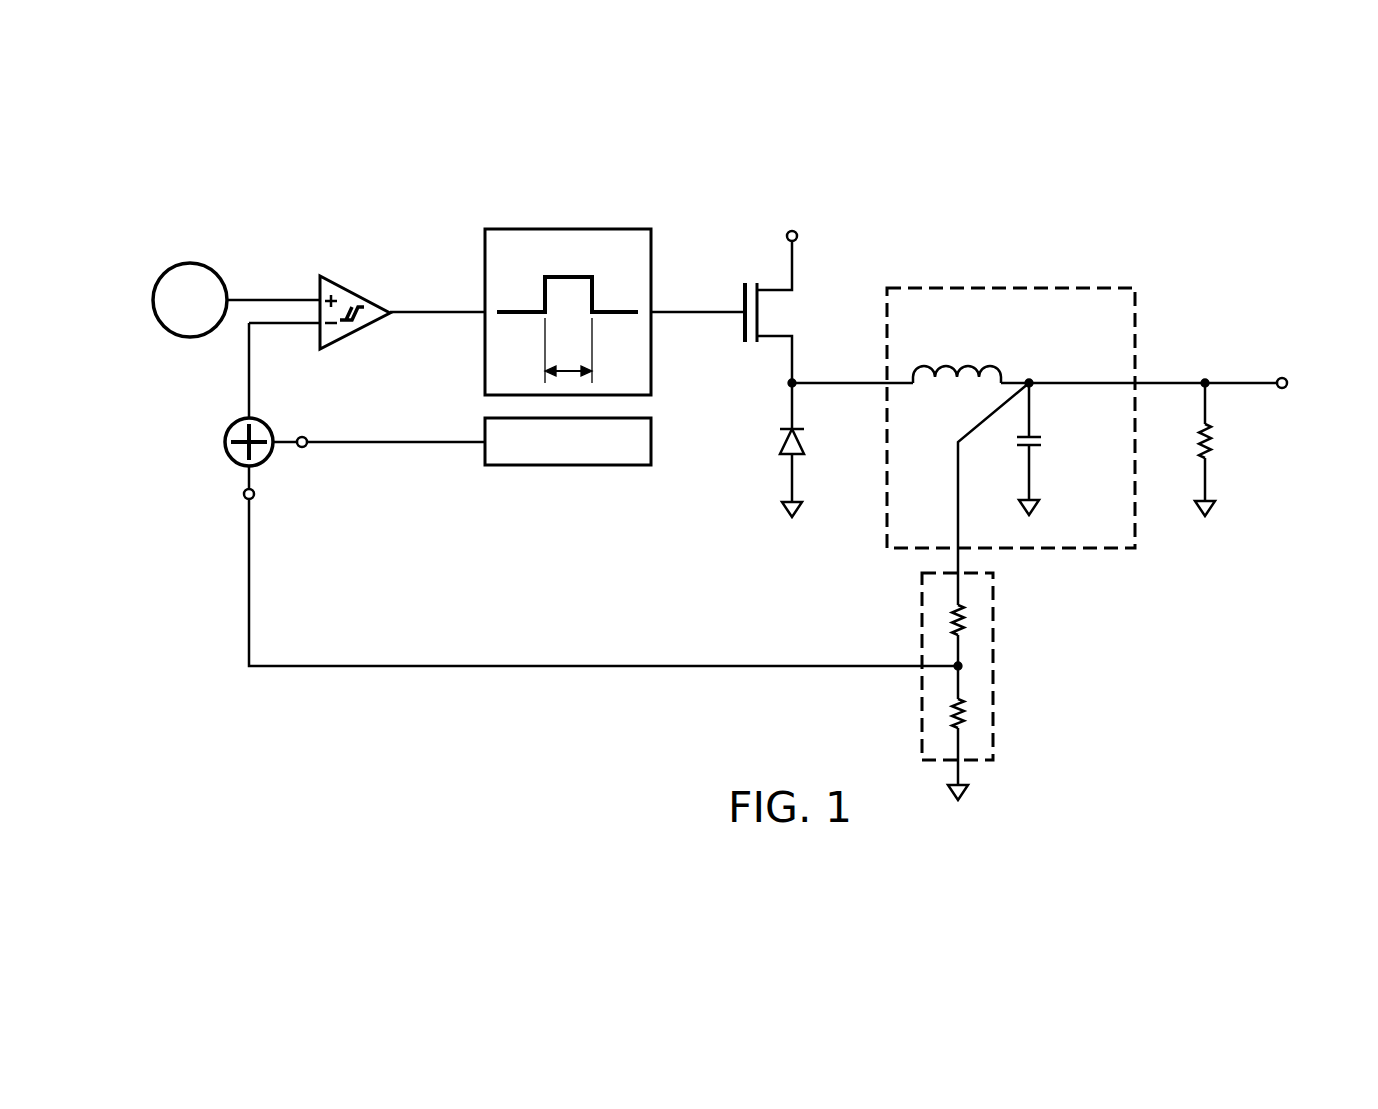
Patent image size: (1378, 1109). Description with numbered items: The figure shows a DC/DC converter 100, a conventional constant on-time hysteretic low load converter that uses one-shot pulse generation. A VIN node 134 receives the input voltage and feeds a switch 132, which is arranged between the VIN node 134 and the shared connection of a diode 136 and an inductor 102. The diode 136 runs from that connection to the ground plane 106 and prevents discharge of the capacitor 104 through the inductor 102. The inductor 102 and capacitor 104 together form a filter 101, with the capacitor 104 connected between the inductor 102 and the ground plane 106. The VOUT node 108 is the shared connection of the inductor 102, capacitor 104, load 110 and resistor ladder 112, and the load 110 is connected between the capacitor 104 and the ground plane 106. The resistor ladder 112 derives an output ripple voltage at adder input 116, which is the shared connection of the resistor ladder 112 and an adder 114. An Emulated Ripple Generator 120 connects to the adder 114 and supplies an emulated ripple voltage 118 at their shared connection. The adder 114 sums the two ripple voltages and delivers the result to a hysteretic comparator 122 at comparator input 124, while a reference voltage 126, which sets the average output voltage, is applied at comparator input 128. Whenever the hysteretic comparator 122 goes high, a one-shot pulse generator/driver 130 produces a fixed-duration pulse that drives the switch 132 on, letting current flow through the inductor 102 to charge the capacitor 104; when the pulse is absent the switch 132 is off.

The DC/DC converter 100 is at (1157, 175).
The filter 101 is at (1011, 383).
The inductor 102 is at (992, 366).
The capacitor 104 is at (1043, 441).
The ground plane 106 is at (798, 510).
The VOUT node 108 is at (1287, 377).
The load 110 is at (1213, 437).
The resistor ladder 112 is at (995, 696).
The adder 114 is at (224, 450).
The adder input 116 is at (243, 495).
The emulated ripple voltage 118 is at (300, 449).
The Emulated Ripple Generator 120 is at (568, 467).
The hysteretic comparator 122 is at (368, 266).
The comparator input 124 is at (296, 325).
The reference voltage 126 is at (189, 263).
The comparator input 128 is at (272, 299).
The one-shot pulse generator/driver 130 is at (568, 228).
The switch 132 is at (742, 297).
The VIN node 134 is at (800, 234).
The diode 136 is at (800, 440).